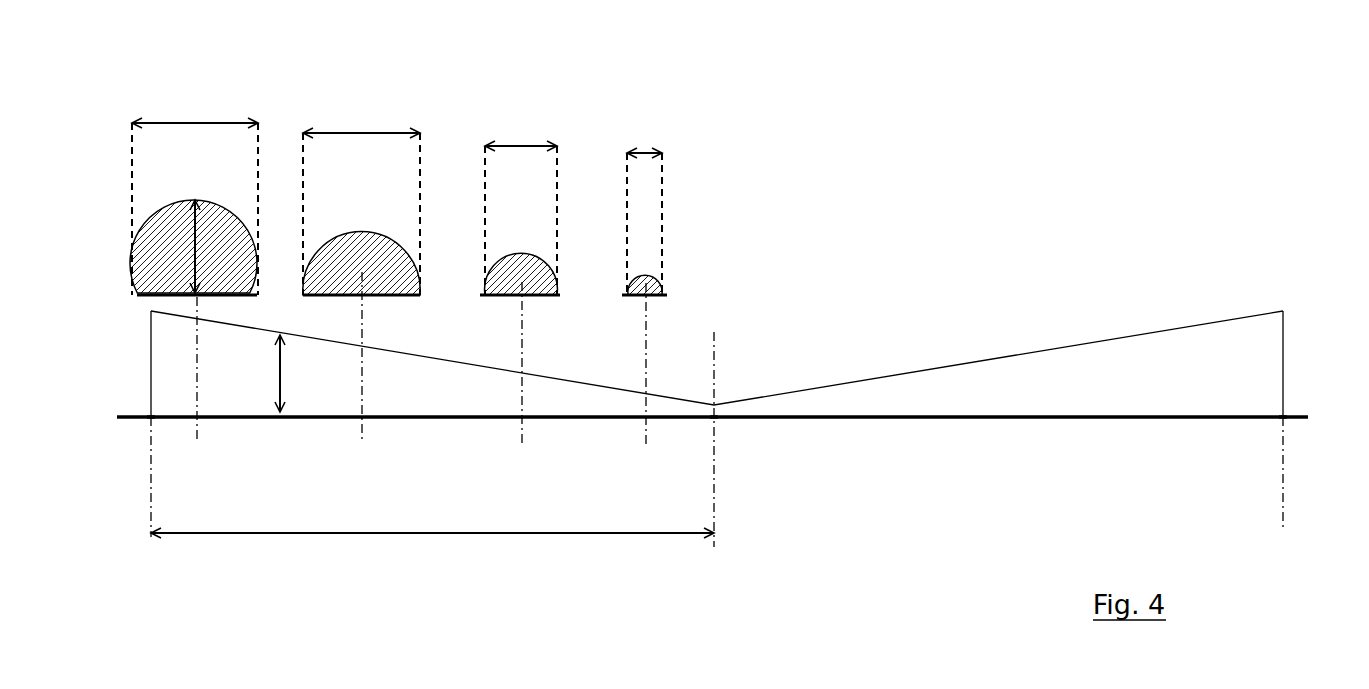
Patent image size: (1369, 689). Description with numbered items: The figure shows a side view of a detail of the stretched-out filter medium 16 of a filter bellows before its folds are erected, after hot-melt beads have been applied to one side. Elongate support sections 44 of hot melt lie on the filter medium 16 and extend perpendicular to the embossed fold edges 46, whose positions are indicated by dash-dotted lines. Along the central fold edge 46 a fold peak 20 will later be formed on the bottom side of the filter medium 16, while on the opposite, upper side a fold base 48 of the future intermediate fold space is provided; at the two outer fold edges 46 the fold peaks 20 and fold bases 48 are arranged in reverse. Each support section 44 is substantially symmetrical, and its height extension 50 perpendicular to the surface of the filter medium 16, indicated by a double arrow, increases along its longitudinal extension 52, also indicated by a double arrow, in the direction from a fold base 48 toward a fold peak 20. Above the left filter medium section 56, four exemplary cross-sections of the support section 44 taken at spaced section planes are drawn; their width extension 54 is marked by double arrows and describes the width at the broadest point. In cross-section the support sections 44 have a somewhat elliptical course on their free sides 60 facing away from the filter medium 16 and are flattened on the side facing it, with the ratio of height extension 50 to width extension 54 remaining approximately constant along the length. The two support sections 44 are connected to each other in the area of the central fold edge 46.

The filter medium 16 is at (257, 268).
The fold peak 20 is at (150, 412).
The support section 44 is at (433, 397).
The fold edge 46 is at (152, 420).
The fold base 48 is at (150, 420).
The height extension 50 is at (190, 243).
The longitudinal extension 52 is at (366, 535).
The width extension 54 is at (200, 122).
The filter medium section 56 is at (557, 415).
The free side 60 is at (195, 200).